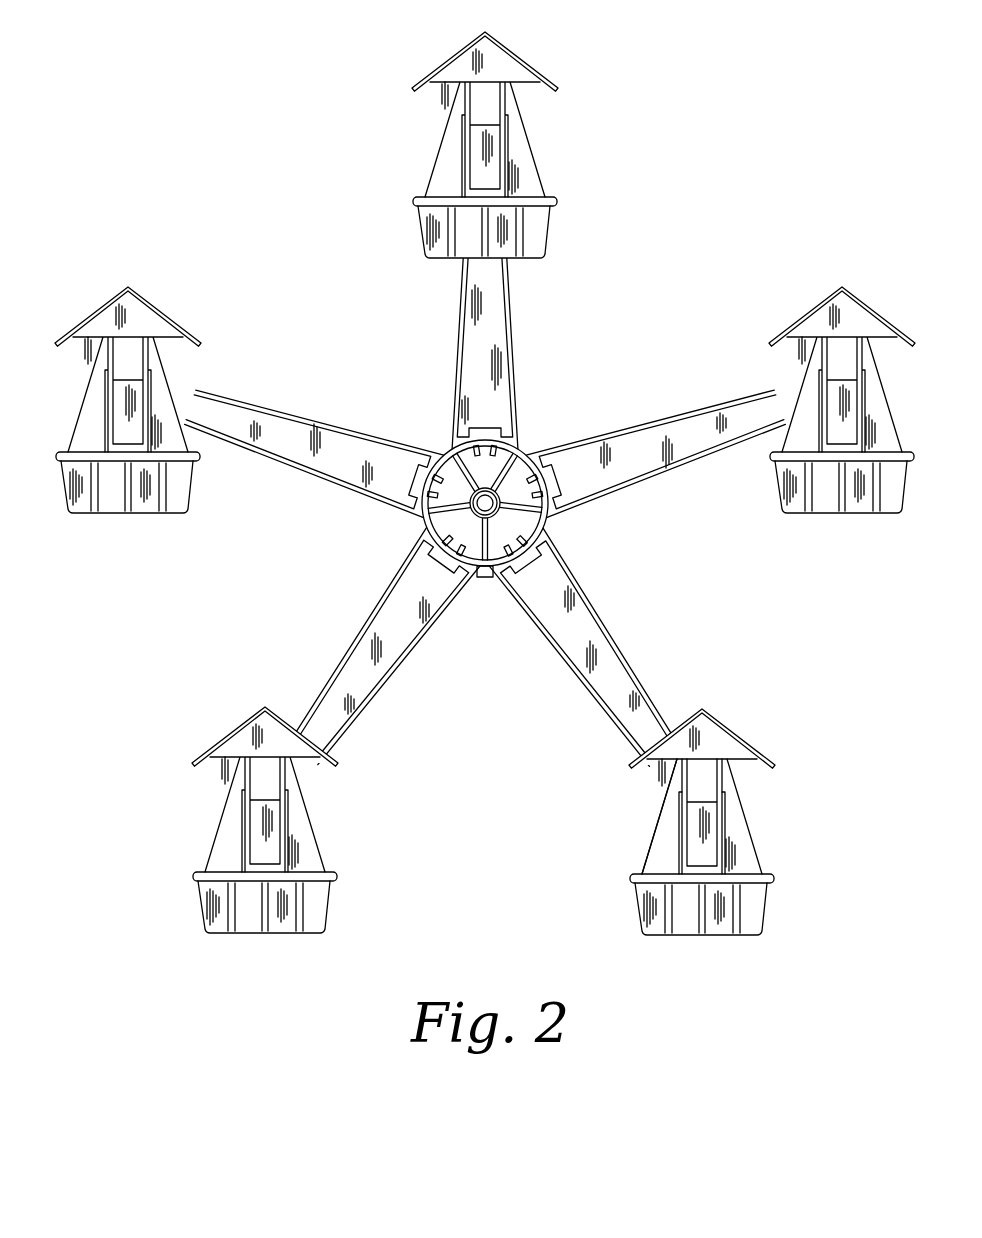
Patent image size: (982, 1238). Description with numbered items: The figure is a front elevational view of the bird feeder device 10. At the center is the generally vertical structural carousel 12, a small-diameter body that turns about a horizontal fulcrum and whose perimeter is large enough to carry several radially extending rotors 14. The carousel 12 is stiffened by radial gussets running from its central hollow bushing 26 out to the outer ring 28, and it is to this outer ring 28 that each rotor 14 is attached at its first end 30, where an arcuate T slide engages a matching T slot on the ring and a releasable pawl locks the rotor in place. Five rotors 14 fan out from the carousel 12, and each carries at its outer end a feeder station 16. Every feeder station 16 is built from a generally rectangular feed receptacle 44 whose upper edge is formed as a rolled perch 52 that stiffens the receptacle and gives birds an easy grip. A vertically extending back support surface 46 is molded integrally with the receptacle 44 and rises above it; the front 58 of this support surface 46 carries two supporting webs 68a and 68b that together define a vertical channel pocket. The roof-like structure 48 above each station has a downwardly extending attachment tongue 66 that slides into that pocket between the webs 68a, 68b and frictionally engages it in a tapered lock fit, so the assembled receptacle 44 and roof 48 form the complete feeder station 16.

The bird feeder device 10 is at (657, 247).
The vertical structural carousel 12 is at (473, 567).
The radial extending rotor 14 is at (667, 440).
The feeder station 16 is at (206, 820).
The central hollow bushing 26 is at (493, 520).
The outer ring 28 is at (550, 528).
The first end 30 is at (592, 440).
The feed receptacle 44 is at (663, 907).
The back support surface 46 is at (738, 816).
The roof-like structure 48 is at (732, 738).
The rolled perch 52 is at (732, 892).
The front 58 is at (618, 816).
The attachment tongue 66 is at (641, 814).
The supporting web 68a is at (786, 824).
The supporting web 68b is at (603, 829).